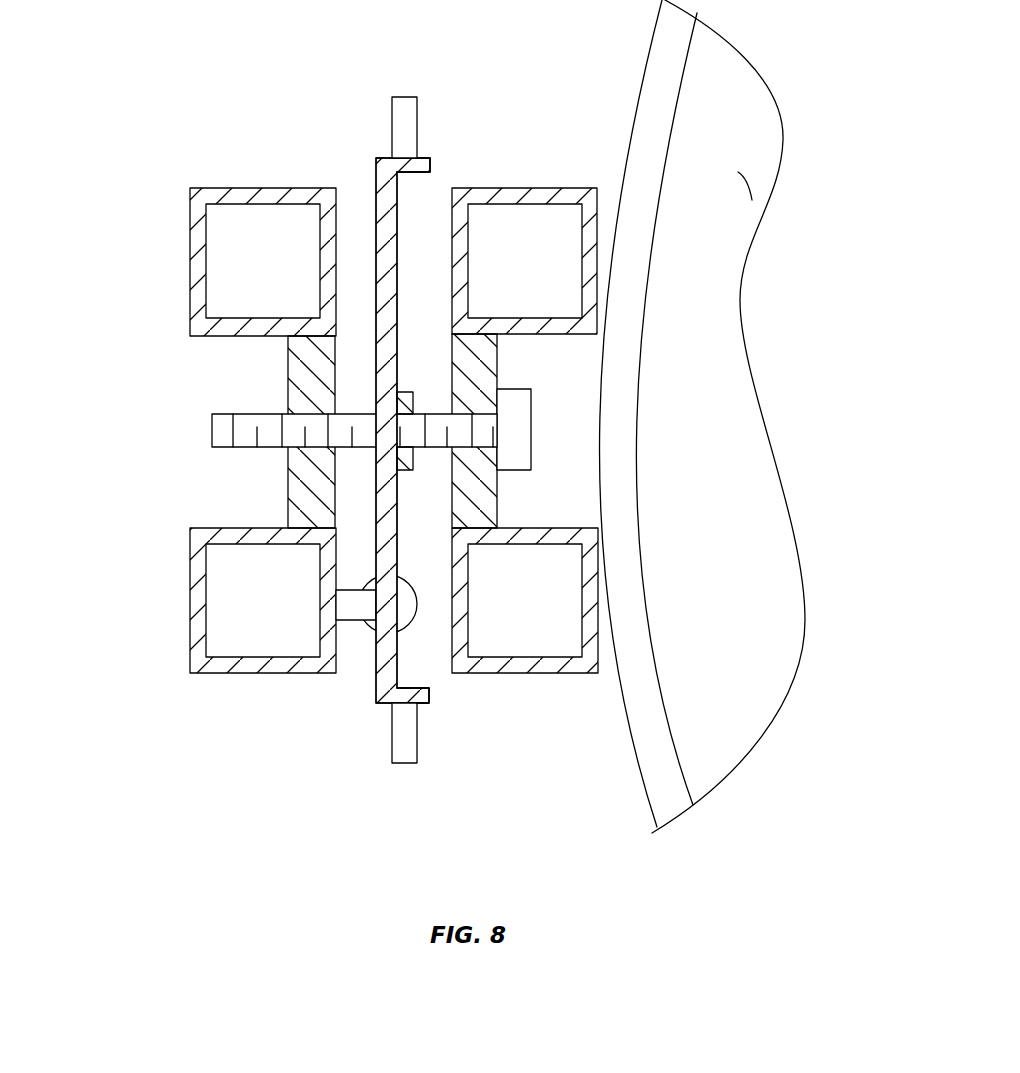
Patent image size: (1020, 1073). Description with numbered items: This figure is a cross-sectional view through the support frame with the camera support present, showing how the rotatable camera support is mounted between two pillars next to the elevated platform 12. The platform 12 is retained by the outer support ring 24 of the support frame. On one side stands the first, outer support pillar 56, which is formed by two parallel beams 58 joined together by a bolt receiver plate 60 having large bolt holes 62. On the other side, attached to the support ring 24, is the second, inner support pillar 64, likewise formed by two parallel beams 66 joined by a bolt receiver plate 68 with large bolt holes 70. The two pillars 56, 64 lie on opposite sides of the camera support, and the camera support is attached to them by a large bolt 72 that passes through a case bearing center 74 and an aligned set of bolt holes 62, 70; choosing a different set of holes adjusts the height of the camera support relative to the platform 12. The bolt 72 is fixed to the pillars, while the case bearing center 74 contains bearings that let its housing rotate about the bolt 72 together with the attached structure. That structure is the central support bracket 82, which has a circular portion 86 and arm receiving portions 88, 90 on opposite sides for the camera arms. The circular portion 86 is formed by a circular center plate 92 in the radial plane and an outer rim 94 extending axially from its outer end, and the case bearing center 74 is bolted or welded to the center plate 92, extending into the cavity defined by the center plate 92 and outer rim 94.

The elevated platform 12 is at (750, 187).
The outer support ring 24 is at (647, 788).
The first support pillar 56 is at (195, 406).
The parallel beams 58 is at (190, 188).
The bolt receiver plate 60 is at (290, 490).
The bolt holes 62 is at (290, 414).
The second support pillar 64 is at (597, 413).
The parallel beams 66 is at (597, 190).
The bolt receiver plate 68 is at (500, 378).
The bolt holes 70 is at (472, 487).
The bolt 72 is at (531, 428).
The case bearing center 74 is at (408, 392).
The central support bracket 82 is at (365, 162).
The circular portion 86 is at (412, 660).
The arm receiving portion 88 is at (392, 97).
The arm receiving portion 90 is at (392, 763).
The center plate 92 is at (378, 662).
The outer rim 94 is at (430, 158).